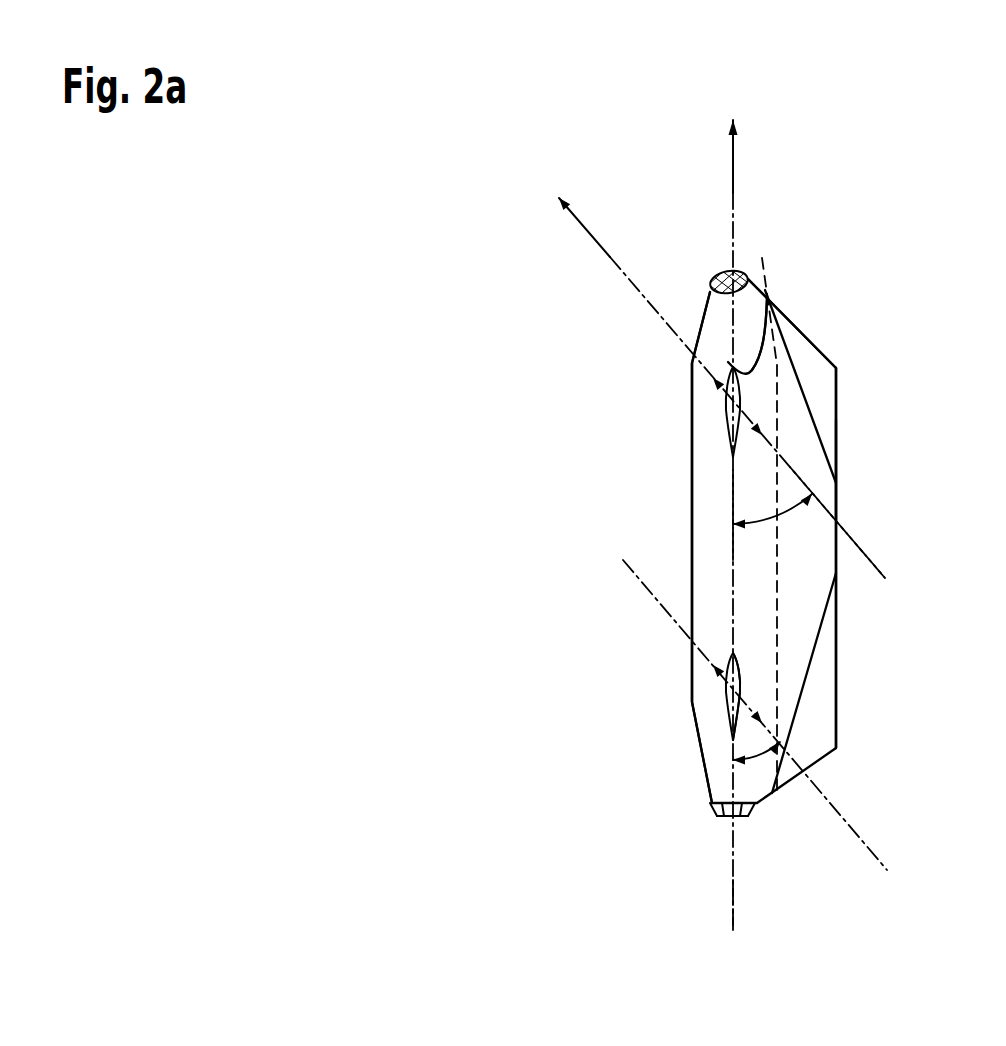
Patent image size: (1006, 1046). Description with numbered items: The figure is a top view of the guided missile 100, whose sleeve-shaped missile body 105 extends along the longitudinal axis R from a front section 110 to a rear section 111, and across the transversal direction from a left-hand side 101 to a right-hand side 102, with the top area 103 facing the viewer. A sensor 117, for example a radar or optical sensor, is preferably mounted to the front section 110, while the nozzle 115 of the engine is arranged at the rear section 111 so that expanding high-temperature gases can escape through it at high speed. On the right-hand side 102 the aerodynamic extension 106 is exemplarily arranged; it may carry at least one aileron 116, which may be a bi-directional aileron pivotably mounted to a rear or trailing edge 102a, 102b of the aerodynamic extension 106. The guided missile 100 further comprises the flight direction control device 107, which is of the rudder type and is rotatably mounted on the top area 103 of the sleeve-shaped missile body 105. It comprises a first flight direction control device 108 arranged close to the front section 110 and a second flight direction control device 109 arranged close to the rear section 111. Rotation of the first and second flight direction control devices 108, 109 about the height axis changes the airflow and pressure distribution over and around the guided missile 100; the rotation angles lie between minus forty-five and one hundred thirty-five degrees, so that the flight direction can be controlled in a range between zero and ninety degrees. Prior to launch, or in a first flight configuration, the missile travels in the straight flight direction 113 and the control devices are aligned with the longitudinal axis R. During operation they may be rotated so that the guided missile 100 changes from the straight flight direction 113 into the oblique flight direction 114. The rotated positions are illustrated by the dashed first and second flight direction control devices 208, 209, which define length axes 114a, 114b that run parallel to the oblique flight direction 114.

The guided missile 100 is at (882, 237).
The left-hand side 101 is at (690, 518).
The right-hand side 102 is at (838, 513).
The trailing edge 102a is at (800, 368).
The trailing edge 102b is at (807, 668).
The top area 103 is at (727, 505).
The sleeve-shaped missile body 105 is at (690, 431).
The aerodynamic extension 106 is at (817, 475).
The flight direction control device 107 is at (727, 360).
The first flight direction control device 108 is at (767, 298).
The second flight direction control device 109 is at (722, 666).
The front section 110 is at (719, 268).
The rear section 111 is at (718, 816).
The straight flight direction 113 is at (733, 160).
The oblique flight direction 114 is at (580, 227).
The length axis 114a is at (867, 552).
The length axis 114b is at (858, 828).
The nozzle 115 is at (737, 817).
The aileron 116 is at (828, 403).
The sensor 117 is at (746, 271).
The dashed first flight direction control device 208 is at (716, 394).
The dashed second flight direction control device 209 is at (718, 683).
The longitudinal axis R is at (737, 922).